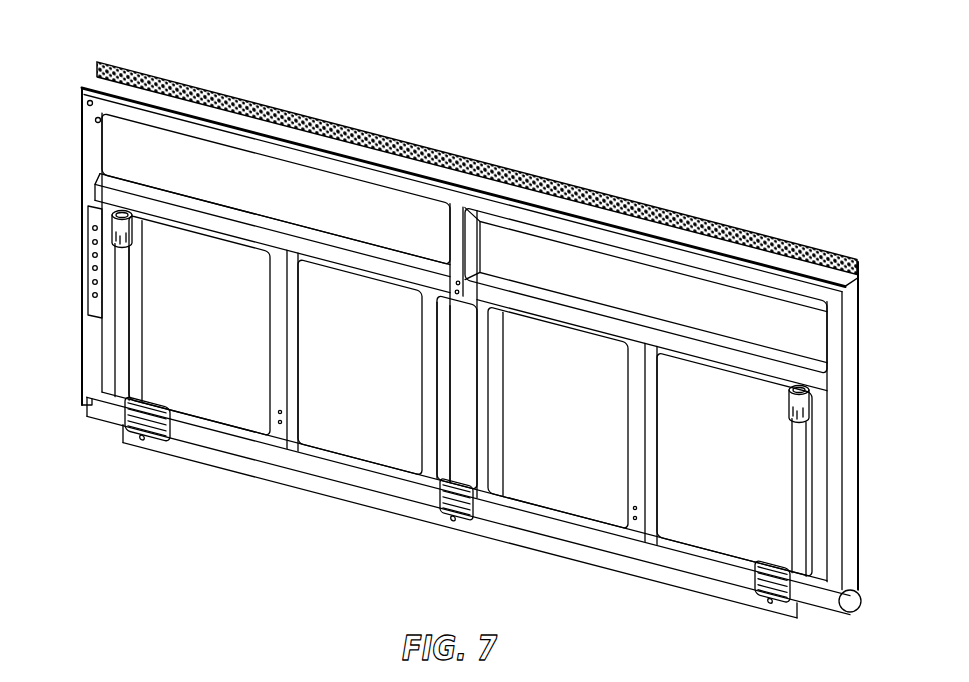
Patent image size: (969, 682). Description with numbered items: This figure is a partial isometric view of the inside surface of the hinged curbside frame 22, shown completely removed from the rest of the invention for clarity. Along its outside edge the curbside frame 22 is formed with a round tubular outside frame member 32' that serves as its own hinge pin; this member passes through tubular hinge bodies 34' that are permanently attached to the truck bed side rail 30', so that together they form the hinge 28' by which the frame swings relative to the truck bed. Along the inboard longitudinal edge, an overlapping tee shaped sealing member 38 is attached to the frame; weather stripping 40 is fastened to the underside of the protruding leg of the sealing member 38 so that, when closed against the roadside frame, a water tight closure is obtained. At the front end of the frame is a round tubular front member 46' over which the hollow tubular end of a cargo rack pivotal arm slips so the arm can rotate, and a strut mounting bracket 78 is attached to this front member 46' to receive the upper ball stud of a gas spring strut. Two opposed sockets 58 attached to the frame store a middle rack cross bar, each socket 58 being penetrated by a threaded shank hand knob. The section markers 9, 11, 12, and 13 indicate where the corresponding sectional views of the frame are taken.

The curbside frame 22 is at (763, 240).
The tee shaped sealing member 38 is at (593, 190).
The weather stripping 40 is at (376, 135).
The round tubular front member 46' is at (56, 246).
The socket 58 is at (113, 226).
The strut mounting bracket 78 is at (88, 284).
The tubular hinge body 34' is at (170, 461).
The round tubular outside frame member 32' is at (474, 502).
The truck bed side rail 30' is at (460, 531).
The hinge 28' is at (738, 614).
The section line 9- 9 is at (134, 468).
The section line 11- 11 is at (506, 514).
The section line 12- 12 is at (809, 454).
The section line 13- 13 is at (842, 343).